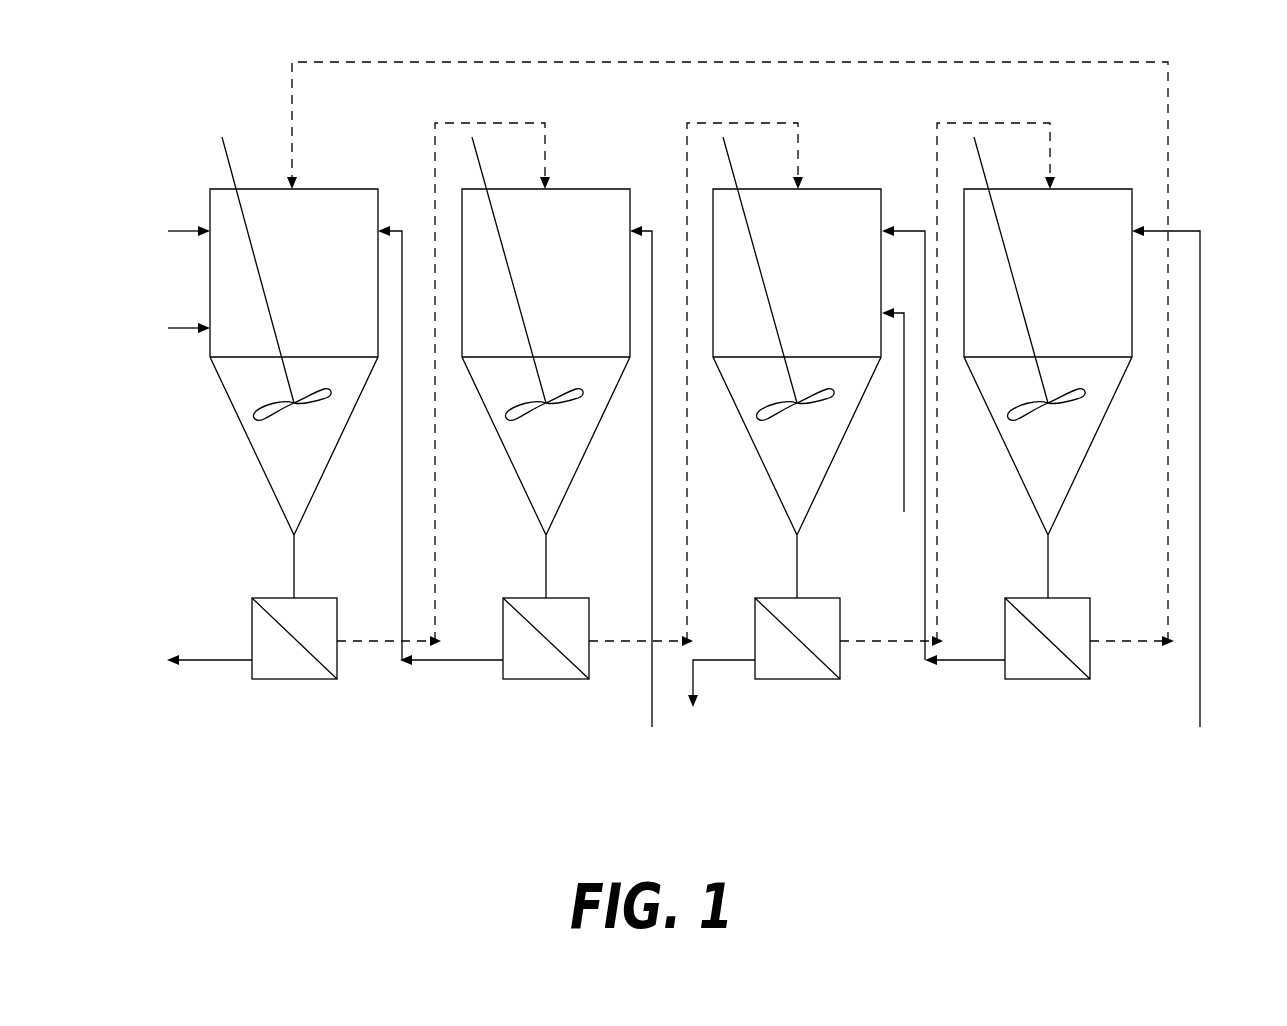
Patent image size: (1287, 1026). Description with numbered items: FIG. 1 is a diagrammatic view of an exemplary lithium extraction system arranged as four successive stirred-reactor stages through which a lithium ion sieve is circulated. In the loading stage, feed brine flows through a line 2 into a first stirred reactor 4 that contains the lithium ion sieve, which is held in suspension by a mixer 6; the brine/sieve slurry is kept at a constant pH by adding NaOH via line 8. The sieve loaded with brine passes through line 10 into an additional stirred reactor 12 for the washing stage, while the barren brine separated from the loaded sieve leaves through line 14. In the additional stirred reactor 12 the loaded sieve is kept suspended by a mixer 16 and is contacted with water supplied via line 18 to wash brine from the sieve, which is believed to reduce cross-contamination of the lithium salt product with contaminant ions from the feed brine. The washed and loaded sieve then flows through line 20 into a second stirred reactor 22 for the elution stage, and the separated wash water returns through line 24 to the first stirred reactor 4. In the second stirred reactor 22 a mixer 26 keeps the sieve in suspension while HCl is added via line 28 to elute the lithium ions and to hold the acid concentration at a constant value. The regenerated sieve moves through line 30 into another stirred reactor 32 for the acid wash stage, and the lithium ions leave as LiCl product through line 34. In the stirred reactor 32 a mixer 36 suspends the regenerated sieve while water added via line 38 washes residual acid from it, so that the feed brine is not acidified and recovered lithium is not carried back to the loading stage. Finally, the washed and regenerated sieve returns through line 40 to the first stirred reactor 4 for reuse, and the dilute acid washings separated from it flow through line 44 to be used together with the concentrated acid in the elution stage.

The line 2 is at (187, 228).
The first stirred reactor 4 is at (265, 188).
The mixer 6 is at (270, 323).
The line 8 is at (185, 327).
The line 10 is at (370, 641).
The additional stirred reactor 12 is at (575, 188).
The line 14 is at (208, 660).
The mixer 16 is at (480, 168).
The line 18 is at (652, 478).
The line 20 is at (610, 641).
The second stirred reactor 22 is at (838, 188).
The line 24 is at (467, 659).
The mixer 26 is at (733, 172).
The line 28 is at (904, 470).
The line 30 is at (862, 641).
The stirred reactor 32 is at (1115, 189).
The line 34 is at (722, 660).
The mixer 36 is at (985, 175).
The line 38 is at (1200, 605).
The line 40 is at (1128, 641).
The line 44 is at (980, 660).